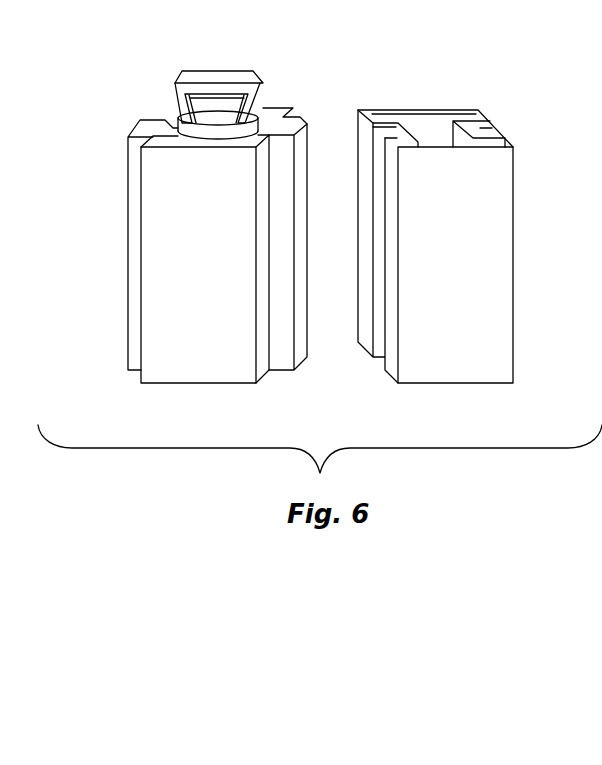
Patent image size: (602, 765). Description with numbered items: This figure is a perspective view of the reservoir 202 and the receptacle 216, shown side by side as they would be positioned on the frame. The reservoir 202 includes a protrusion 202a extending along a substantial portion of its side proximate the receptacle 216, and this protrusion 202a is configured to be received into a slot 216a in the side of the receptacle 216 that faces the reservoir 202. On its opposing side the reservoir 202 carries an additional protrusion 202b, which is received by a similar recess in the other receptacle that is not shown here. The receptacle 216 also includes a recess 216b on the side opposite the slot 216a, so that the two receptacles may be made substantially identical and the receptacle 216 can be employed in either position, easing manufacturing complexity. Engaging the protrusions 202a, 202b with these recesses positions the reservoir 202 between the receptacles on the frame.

The reservoir 202 is at (155, 343).
The protrusion 202a is at (282, 343).
The additional protrusion 202b is at (133, 175).
The receptacle 216 is at (438, 216).
The slot 216a is at (360, 110).
The recess 216b is at (490, 128).